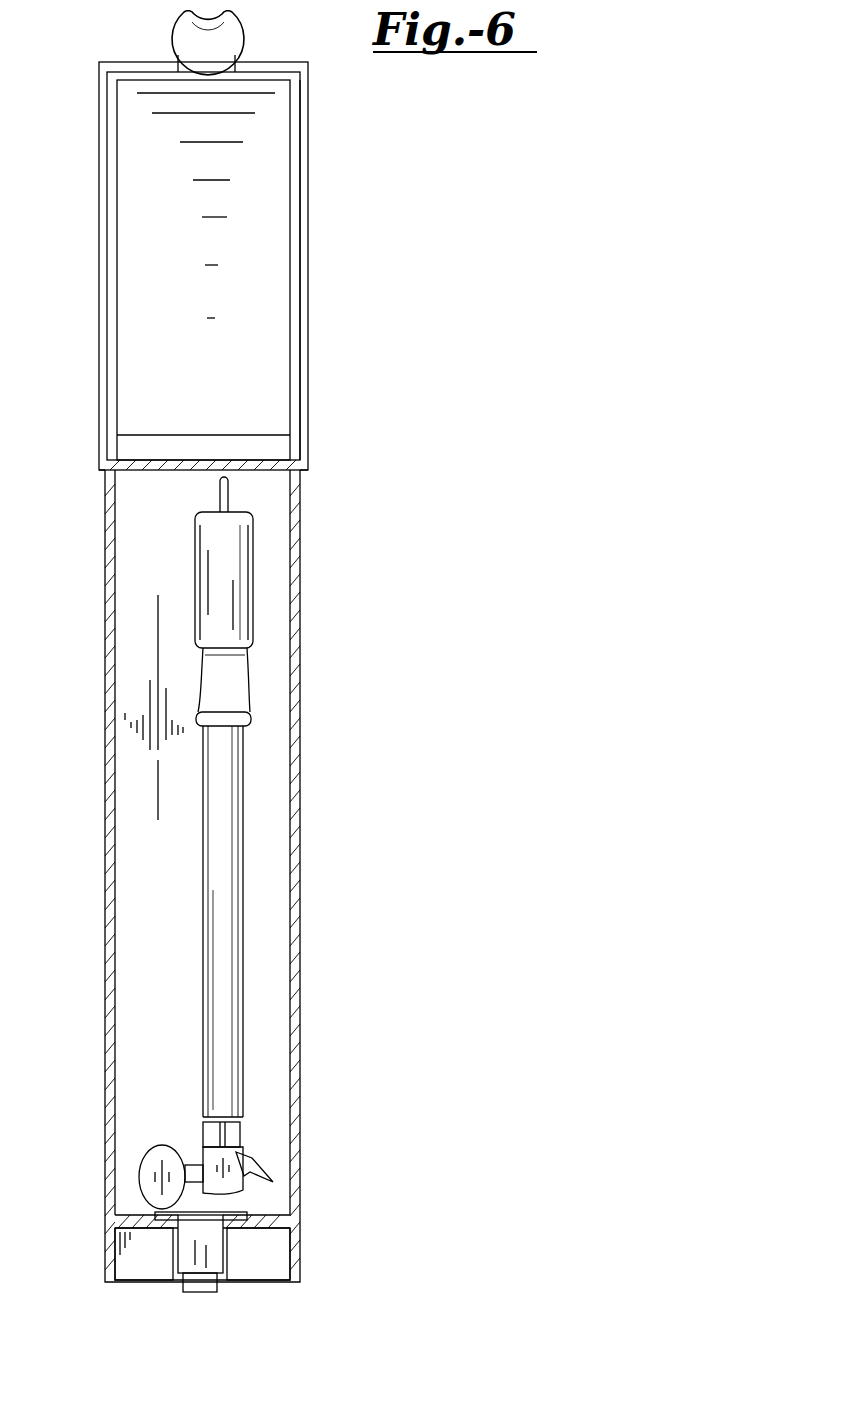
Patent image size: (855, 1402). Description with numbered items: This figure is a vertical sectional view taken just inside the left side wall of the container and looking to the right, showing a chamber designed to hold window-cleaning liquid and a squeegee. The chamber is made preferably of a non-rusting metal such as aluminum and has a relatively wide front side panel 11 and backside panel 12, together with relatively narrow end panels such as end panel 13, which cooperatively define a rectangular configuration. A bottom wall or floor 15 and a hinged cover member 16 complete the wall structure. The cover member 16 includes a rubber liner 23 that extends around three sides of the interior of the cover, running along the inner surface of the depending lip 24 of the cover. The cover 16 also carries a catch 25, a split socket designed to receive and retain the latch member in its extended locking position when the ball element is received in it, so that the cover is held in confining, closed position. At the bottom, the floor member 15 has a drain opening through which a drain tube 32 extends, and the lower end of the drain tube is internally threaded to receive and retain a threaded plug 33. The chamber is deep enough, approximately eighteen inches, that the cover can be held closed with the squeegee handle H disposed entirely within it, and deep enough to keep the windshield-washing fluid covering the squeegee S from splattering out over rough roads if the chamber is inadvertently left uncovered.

The front side panel 11 is at (105, 778).
The backside panel 12 is at (300, 820).
The end panel 13 is at (188, 1005).
The bottom wall or floor 15 is at (272, 1218).
The hinged cover member 16 is at (309, 245).
The rubber liner 23 is at (133, 80).
The depending lip 24 is at (308, 165).
The catch 25 is at (246, 22).
The drain tube 32 is at (227, 1247).
The threaded plug 33 is at (185, 1296).
The squeegee handle H is at (203, 845).
The squeegee S is at (150, 1148).